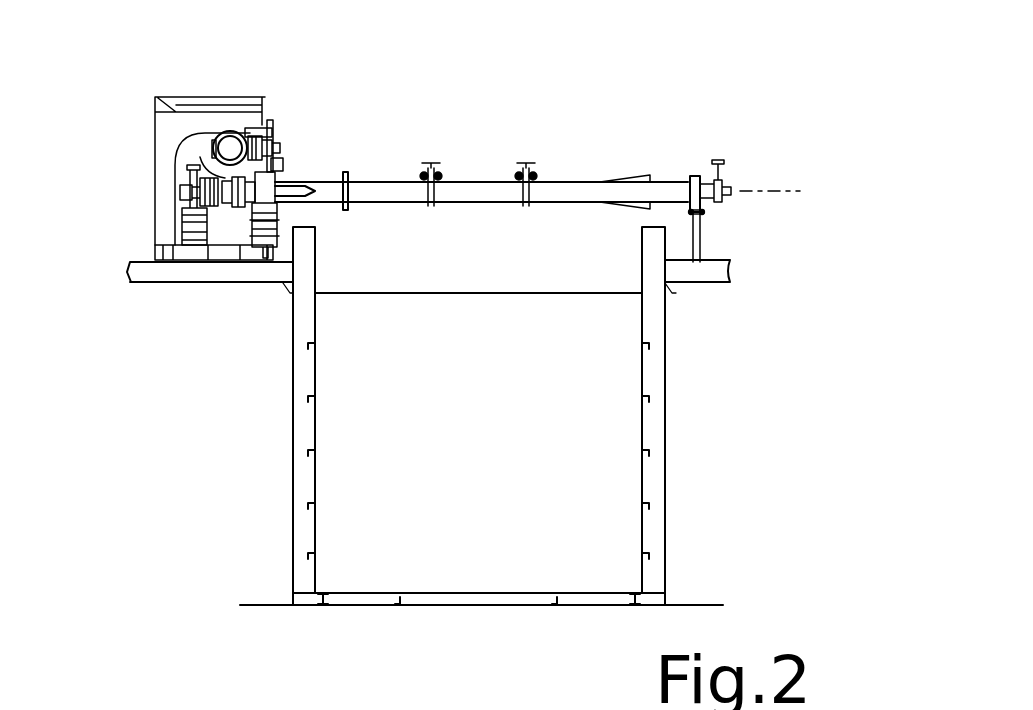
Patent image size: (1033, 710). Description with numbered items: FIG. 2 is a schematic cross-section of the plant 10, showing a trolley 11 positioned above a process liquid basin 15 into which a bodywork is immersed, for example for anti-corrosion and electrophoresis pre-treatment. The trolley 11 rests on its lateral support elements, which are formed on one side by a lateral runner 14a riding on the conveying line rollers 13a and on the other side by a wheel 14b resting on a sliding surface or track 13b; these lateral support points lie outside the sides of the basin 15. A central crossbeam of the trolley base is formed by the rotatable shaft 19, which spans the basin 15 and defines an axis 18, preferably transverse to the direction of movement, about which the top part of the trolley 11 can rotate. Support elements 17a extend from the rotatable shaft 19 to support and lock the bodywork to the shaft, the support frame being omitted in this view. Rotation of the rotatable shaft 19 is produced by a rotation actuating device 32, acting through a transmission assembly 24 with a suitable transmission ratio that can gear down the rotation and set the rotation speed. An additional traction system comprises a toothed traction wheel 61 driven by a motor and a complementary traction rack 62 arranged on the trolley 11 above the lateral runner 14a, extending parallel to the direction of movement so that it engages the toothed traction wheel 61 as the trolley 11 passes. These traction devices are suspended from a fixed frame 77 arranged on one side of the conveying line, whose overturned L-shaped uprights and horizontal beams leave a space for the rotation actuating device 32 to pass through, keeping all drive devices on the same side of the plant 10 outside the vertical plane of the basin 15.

The plant 10 is at (686, 52).
The trolley 11 is at (561, 138).
The rollers 13a is at (250, 216).
The sliding surface or track 13b is at (710, 210).
The lateral runner 14a is at (285, 208).
The wheel 14b is at (700, 176).
The process liquid basin 15 is at (335, 462).
The support elements 17a is at (527, 165).
The axis 18 is at (754, 190).
The rotatable shaft 19 is at (558, 190).
The transmission assembly 24 is at (200, 157).
The rotation actuating device 32 is at (177, 265).
The toothed traction wheel 61 is at (283, 133).
The traction rack 62 is at (282, 163).
The fixed frame 77 is at (150, 170).